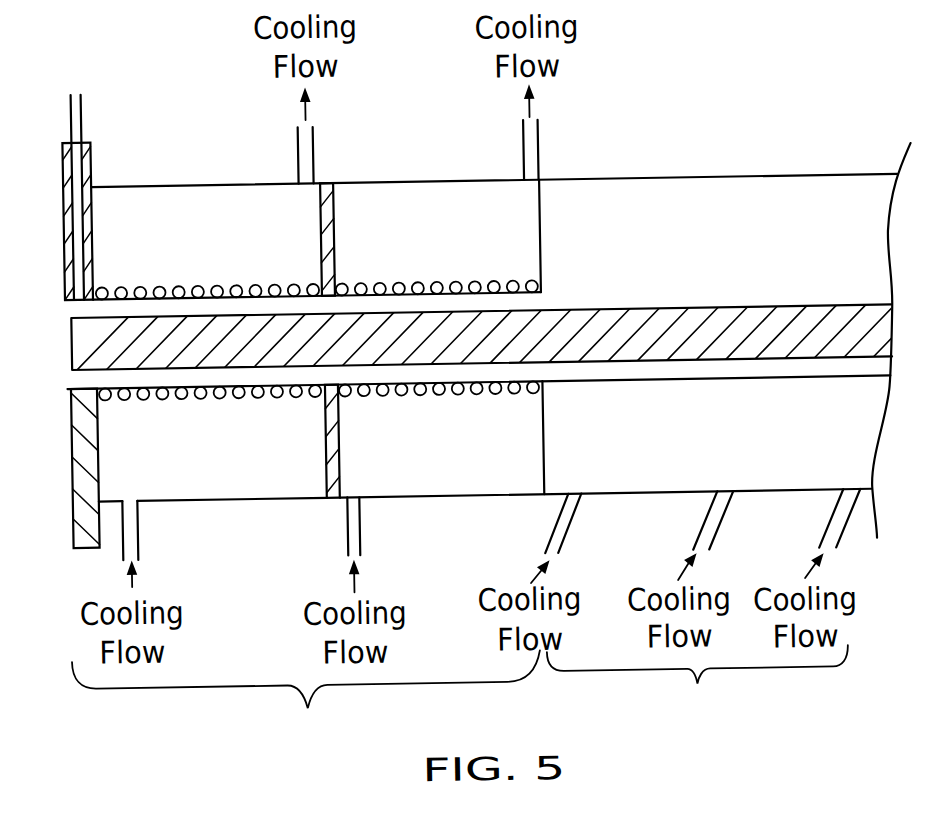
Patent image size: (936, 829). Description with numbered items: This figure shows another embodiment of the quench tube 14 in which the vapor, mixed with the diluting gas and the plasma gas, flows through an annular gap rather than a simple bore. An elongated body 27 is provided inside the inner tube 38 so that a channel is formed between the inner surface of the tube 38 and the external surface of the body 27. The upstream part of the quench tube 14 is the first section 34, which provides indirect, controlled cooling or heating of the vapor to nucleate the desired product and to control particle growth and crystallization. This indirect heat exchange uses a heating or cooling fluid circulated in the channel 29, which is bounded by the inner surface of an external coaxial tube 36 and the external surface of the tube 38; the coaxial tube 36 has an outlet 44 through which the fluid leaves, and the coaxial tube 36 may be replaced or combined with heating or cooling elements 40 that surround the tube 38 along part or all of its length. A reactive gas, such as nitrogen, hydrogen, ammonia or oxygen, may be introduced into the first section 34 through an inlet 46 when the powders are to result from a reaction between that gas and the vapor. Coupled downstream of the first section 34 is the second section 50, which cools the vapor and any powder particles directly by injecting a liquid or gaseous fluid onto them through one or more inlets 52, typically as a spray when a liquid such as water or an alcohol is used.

The quench tube 14 is at (384, 166).
The elongated body 27 is at (668, 337).
The channel 29 is at (445, 477).
The first section 34 is at (306, 701).
The external coaxial tube 36 is at (250, 395).
The inner tube 38 is at (255, 503).
The heating or cooling elements 40 is at (253, 286).
The outlet 44 is at (300, 167).
The inlet 46 is at (79, 79).
The second section 50 is at (698, 684).
The inlet 52 is at (571, 521).